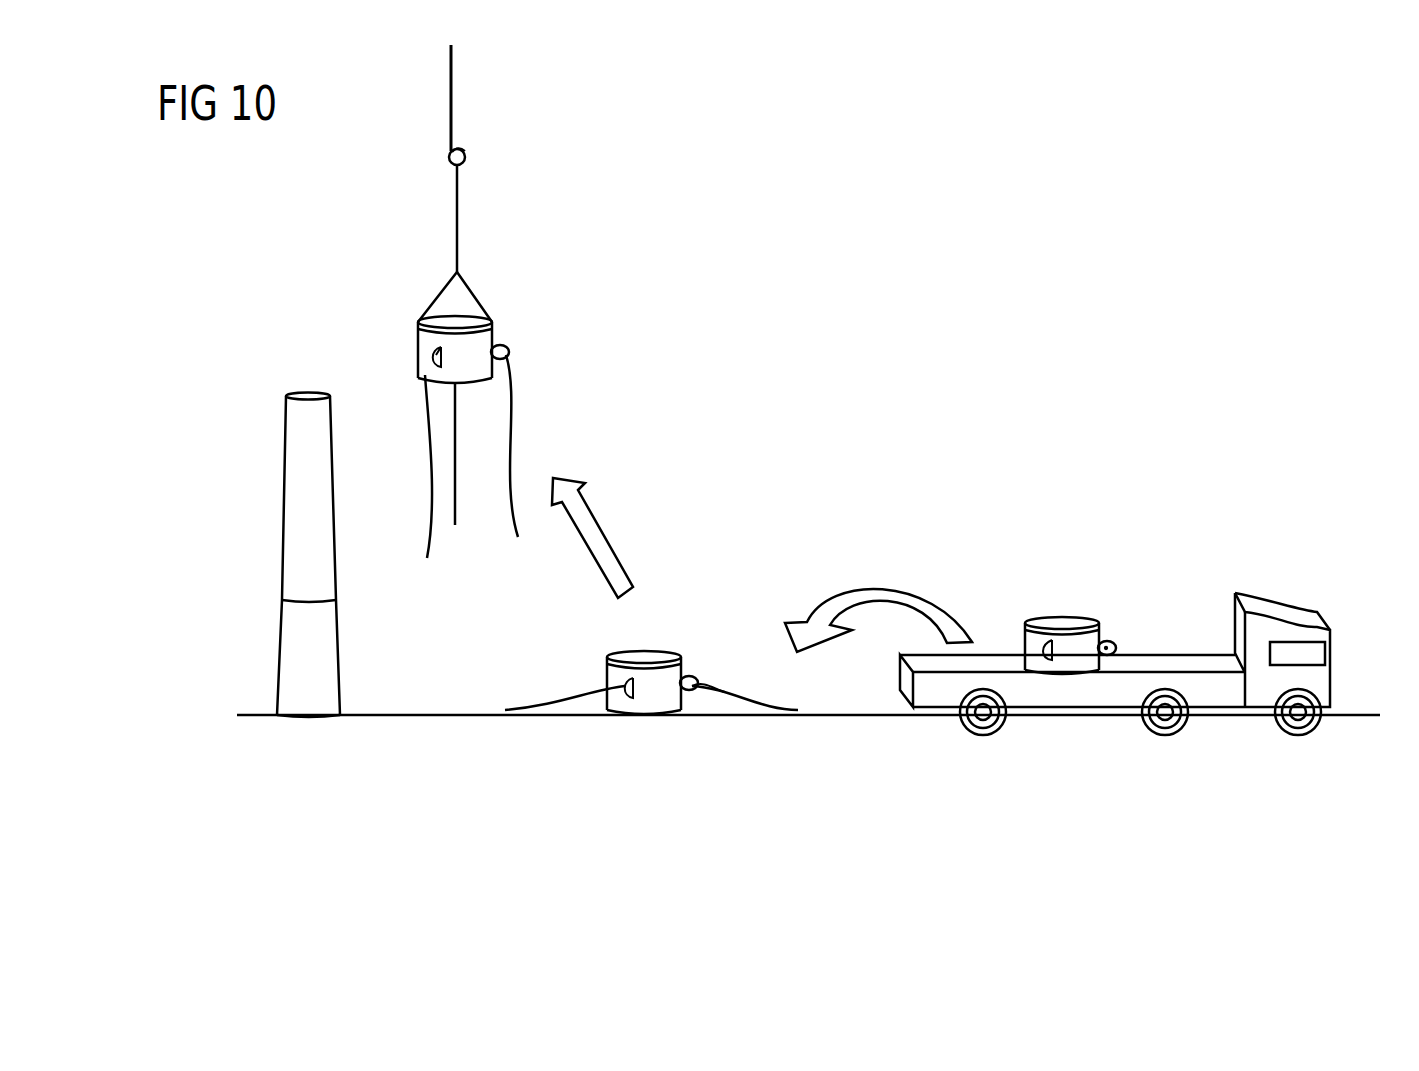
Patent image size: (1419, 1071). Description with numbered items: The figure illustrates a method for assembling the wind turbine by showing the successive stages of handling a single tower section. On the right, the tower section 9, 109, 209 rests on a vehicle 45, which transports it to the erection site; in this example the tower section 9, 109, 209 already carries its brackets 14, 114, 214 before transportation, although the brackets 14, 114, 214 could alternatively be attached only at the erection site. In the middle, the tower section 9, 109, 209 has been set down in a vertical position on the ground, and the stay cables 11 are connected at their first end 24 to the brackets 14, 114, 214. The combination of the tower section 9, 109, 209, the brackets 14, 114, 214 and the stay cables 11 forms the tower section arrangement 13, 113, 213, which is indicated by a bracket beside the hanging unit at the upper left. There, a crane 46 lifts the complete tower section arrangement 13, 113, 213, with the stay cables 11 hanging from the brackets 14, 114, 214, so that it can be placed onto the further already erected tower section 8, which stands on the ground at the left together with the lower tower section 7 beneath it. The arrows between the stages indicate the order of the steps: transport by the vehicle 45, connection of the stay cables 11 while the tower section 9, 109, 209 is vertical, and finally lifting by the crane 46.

The tower lower segment 7 is at (339, 640).
The already erected tower section 8 is at (336, 515).
The tower section 9 is at (758, 543).
The tower section 109 is at (758, 543).
The tower section 209 is at (493, 323).
The stay cables 11 is at (514, 396).
The tower section arrangement 13 is at (686, 330).
The tower section arrangement 113 is at (686, 330).
The tower section arrangement 213 is at (764, 268).
The brackets 14 is at (863, 506).
The brackets 114 is at (863, 506).
The brackets 214 is at (508, 344).
The first end 24 is at (695, 690).
The vehicle 45 is at (1283, 613).
The crane 46 is at (450, 108).